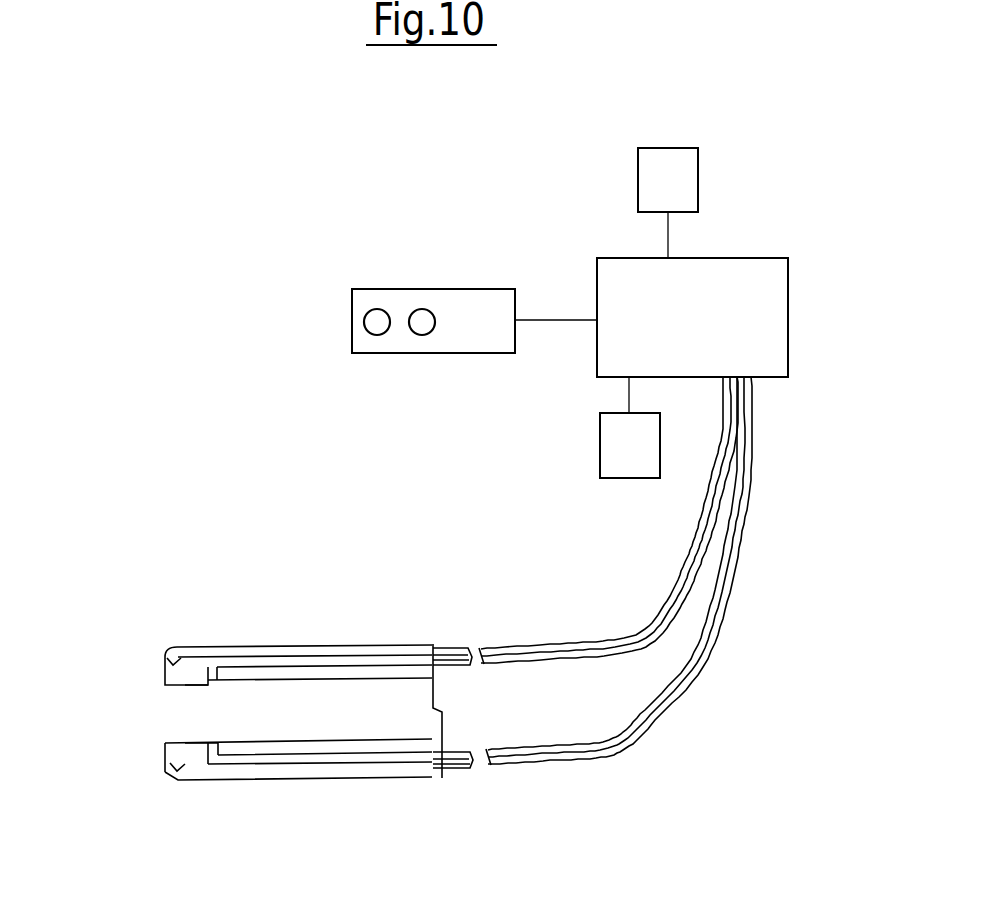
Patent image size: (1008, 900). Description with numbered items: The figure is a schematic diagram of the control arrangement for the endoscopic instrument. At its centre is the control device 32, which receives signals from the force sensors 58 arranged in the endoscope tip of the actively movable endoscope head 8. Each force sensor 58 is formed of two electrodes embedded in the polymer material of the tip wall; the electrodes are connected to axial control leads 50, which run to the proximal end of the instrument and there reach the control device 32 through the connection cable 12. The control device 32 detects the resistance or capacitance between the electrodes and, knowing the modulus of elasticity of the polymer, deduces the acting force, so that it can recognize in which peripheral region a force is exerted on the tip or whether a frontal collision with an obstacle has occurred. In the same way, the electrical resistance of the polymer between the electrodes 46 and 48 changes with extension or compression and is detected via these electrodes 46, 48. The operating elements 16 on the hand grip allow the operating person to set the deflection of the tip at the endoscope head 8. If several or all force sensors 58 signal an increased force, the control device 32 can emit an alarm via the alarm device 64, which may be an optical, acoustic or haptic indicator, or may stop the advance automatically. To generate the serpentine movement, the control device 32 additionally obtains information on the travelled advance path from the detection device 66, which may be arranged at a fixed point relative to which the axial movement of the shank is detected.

The endoscope head 8 is at (247, 645).
The connection cable 12 is at (770, 710).
The operating elements 16 is at (400, 315).
The control device 32 is at (762, 307).
The electrode 46 is at (207, 660).
The electrode 48 is at (217, 747).
The control leads 50 is at (455, 657).
The force sensors 58 is at (168, 658).
The alarm device 64 is at (682, 188).
The detection device 66 is at (540, 455).